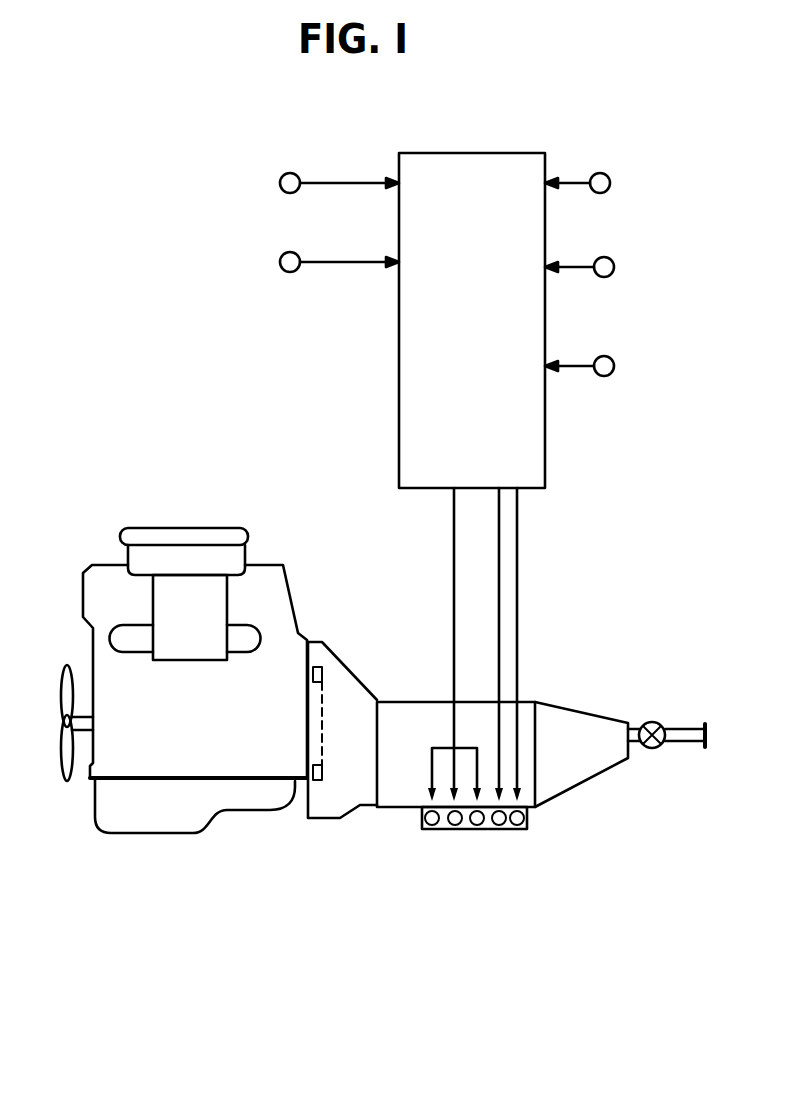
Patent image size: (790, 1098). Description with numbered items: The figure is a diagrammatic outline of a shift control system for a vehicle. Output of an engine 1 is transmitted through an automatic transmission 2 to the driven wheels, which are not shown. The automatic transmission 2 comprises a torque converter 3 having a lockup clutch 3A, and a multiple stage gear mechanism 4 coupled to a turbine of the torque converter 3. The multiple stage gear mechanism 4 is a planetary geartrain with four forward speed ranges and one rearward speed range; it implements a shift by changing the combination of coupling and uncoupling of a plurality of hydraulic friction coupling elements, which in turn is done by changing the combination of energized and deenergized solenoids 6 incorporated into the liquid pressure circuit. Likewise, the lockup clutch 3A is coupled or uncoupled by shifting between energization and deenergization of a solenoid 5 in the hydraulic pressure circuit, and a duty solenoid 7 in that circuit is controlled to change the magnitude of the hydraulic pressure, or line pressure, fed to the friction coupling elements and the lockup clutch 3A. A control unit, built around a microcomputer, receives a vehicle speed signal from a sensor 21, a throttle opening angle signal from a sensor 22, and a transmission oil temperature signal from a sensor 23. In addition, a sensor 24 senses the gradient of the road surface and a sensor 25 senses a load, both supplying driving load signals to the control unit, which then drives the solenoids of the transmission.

The engine 1 is at (177, 765).
The automatic transmission 2 is at (504, 776).
The torque converter 3 is at (357, 746).
The lockup clutch 3A is at (324, 676).
The multiple stage gear mechanism 4 is at (541, 786).
The solenoid 5 is at (499, 826).
The solenoids 6 is at (476, 828).
The duty solenoid 7 is at (517, 826).
The sensor 21 is at (610, 178).
The sensor 22 is at (614, 267).
The sensor 23 is at (614, 366).
The sensor 24 is at (282, 190).
The sensor 25 is at (282, 269).